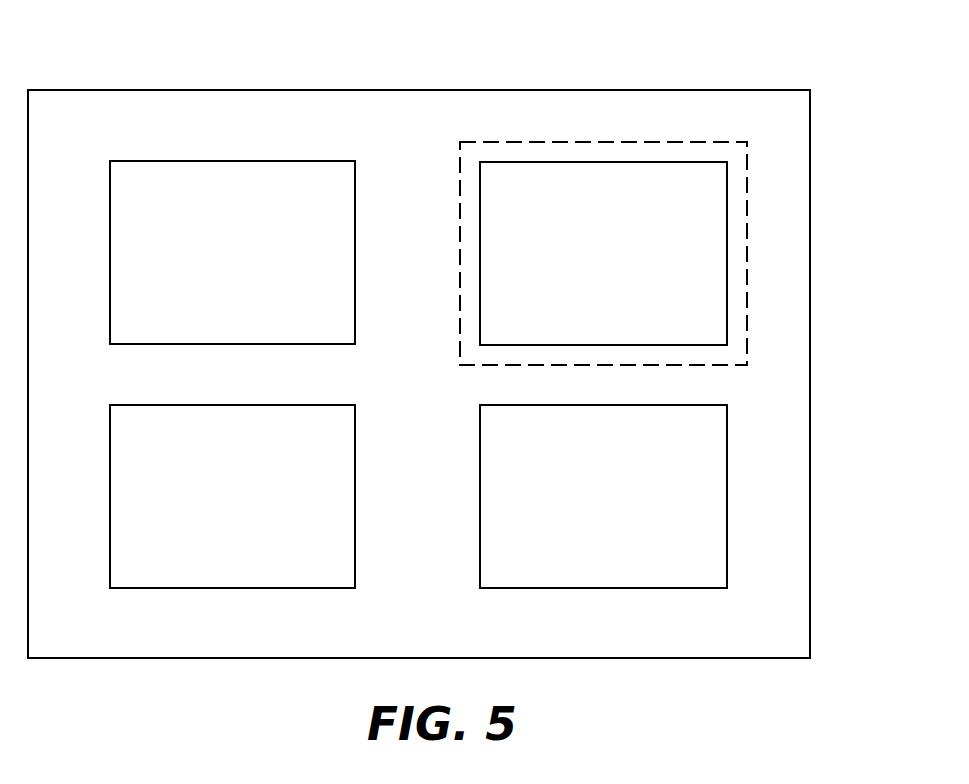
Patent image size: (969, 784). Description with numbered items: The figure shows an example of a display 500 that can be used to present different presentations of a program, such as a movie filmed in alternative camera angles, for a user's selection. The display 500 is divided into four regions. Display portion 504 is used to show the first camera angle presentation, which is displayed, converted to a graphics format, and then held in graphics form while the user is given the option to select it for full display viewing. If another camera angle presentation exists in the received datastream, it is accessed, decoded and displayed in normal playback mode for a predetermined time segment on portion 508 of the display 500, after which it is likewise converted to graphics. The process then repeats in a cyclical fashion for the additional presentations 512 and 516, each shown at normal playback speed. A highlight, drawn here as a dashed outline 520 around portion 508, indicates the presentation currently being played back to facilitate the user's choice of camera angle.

The display 500 is at (521, 90).
The display portion 504 is at (233, 178).
The display portion 508 is at (660, 182).
The display presentation 512 is at (225, 567).
The display presentation 516 is at (653, 567).
The selection indicator (dashed outline) 520 is at (747, 217).